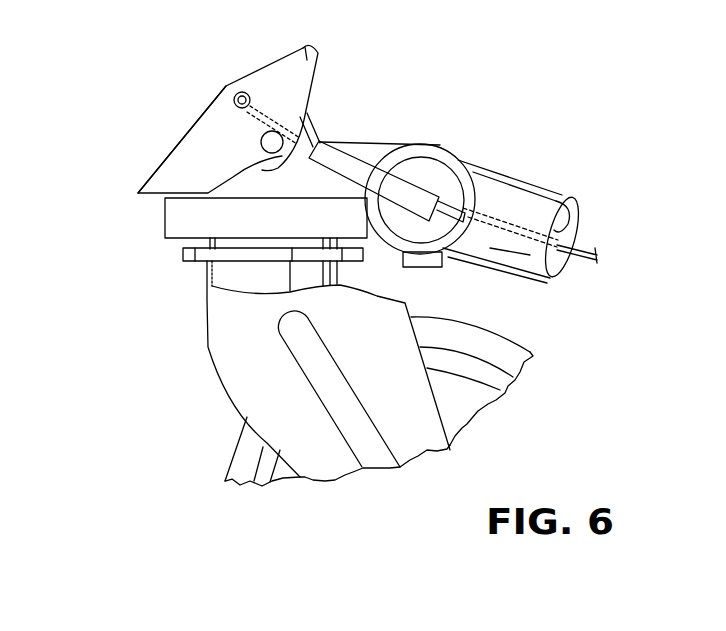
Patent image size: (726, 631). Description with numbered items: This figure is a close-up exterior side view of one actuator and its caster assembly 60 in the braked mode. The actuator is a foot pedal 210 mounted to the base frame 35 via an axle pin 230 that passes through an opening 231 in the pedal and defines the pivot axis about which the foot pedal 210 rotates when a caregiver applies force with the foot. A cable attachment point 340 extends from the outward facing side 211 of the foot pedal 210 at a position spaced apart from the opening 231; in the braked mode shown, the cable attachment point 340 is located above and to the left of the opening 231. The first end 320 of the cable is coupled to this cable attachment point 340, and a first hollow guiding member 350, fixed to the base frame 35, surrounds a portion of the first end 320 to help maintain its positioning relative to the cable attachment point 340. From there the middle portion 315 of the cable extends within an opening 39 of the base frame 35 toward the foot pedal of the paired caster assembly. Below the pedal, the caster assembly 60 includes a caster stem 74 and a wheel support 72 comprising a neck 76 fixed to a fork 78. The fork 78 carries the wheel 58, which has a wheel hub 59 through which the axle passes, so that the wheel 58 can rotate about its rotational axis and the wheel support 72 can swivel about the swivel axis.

The caster assembly 60 is at (183, 63).
The foot pedal 210 is at (285, 67).
The outward facing side 211 is at (302, 52).
The cable attachment point 340 is at (235, 97).
The axle pin 230 is at (262, 138).
The opening 231 is at (270, 154).
The first end 320 is at (303, 120).
The first hollow guiding member 350 is at (381, 158).
The middle portion 315 is at (458, 168).
The base frame 35 is at (535, 188).
The opening 39 is at (590, 212).
The caster stem 74 is at (222, 278).
The neck 76 is at (225, 337).
The fork 78 is at (313, 457).
The wheel 58 is at (507, 347).
The wheel hub 59 is at (457, 403).
The wheel support 72 is at (507, 307).